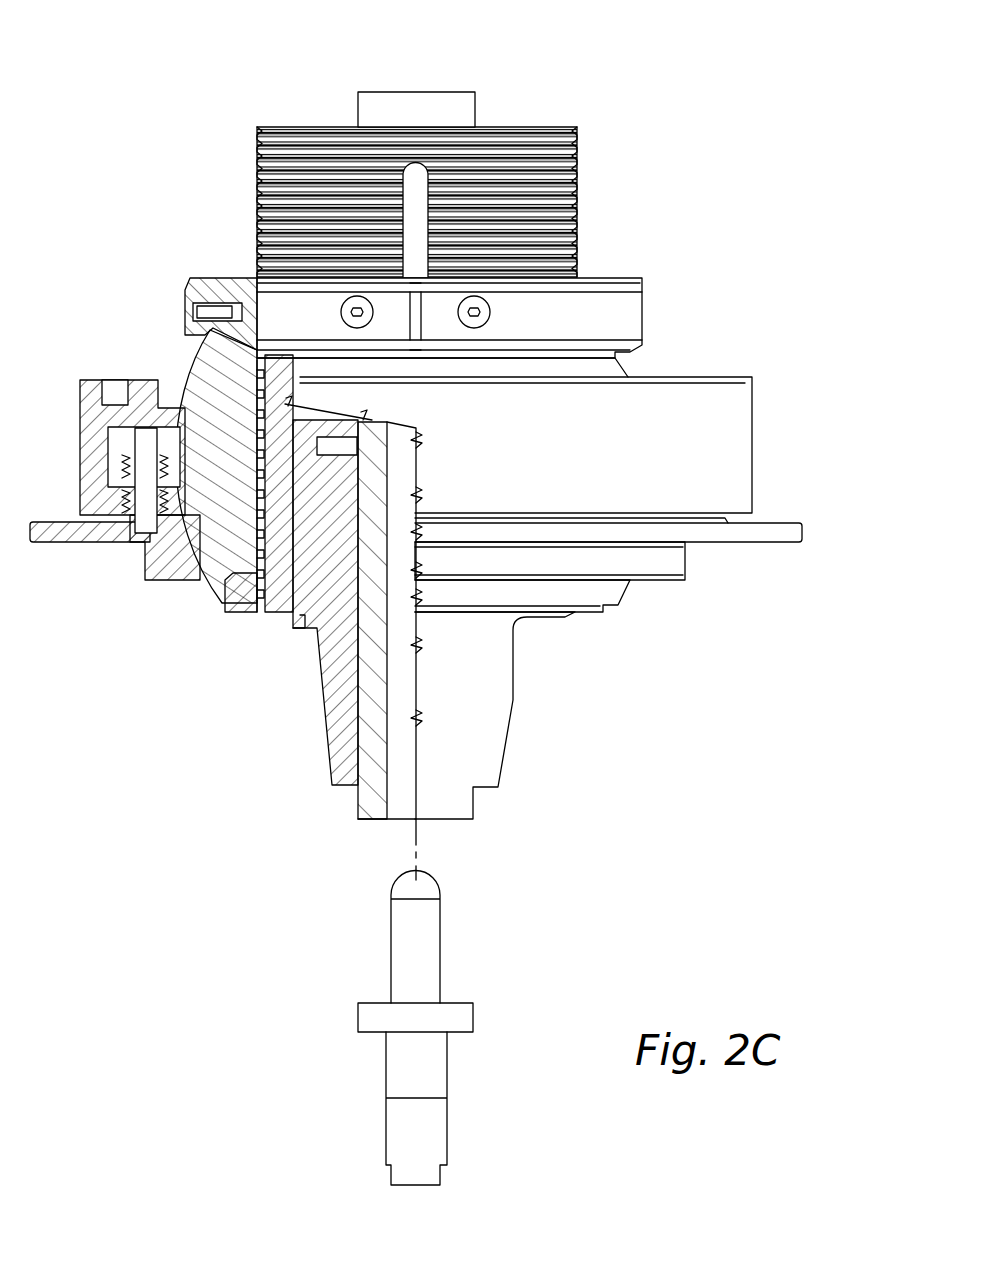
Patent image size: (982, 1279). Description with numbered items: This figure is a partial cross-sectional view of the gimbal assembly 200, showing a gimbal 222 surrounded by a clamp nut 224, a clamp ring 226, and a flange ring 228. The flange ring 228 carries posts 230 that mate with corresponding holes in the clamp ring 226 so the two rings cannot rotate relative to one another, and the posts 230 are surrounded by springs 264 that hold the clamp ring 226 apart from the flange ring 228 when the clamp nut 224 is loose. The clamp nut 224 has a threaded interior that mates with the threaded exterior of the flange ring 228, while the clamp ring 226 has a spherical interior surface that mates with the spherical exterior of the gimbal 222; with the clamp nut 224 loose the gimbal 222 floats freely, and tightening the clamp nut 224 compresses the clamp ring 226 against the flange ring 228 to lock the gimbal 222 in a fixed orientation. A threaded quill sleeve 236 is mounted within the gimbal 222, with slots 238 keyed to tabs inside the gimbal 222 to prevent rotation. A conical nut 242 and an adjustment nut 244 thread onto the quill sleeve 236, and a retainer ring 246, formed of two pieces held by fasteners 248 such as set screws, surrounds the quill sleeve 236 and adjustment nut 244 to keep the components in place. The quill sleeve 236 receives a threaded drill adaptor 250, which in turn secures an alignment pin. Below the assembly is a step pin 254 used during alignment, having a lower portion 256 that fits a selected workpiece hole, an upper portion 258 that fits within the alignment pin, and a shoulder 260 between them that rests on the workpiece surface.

The gimbal assembly 200 is at (142, 55).
The gimbal 222 is at (213, 343).
The clamp nut 224 is at (724, 377).
The clamp ring 226 is at (172, 405).
The flange ring 228 is at (775, 543).
The posts 230 is at (138, 530).
The quill sleeve 236 is at (553, 127).
The slots 238 is at (415, 165).
The conical nut 242 is at (243, 613).
The adjustment nut 244 is at (612, 278).
The retainer ring 246 is at (640, 320).
The fasteners 248 is at (350, 300).
The drill adaptor 250 is at (318, 708).
The step pin 254 is at (330, 940).
The lower portion 256 is at (440, 1083).
The upper portion 258 is at (430, 937).
The shoulder 260 is at (462, 1003).
The springs 264 is at (128, 508).